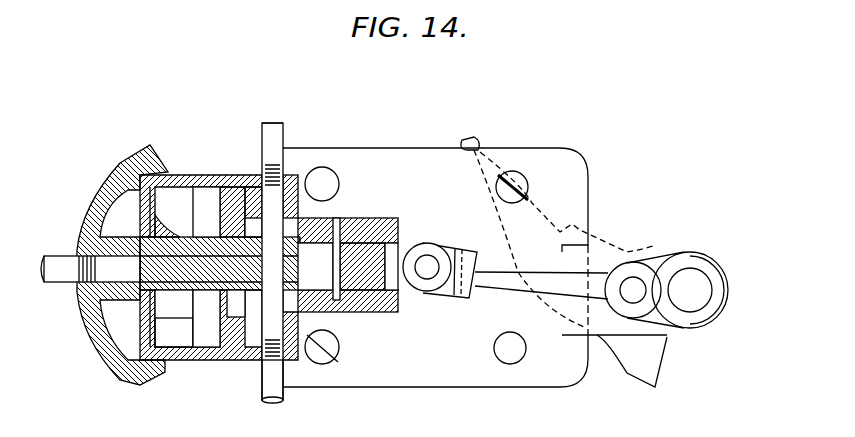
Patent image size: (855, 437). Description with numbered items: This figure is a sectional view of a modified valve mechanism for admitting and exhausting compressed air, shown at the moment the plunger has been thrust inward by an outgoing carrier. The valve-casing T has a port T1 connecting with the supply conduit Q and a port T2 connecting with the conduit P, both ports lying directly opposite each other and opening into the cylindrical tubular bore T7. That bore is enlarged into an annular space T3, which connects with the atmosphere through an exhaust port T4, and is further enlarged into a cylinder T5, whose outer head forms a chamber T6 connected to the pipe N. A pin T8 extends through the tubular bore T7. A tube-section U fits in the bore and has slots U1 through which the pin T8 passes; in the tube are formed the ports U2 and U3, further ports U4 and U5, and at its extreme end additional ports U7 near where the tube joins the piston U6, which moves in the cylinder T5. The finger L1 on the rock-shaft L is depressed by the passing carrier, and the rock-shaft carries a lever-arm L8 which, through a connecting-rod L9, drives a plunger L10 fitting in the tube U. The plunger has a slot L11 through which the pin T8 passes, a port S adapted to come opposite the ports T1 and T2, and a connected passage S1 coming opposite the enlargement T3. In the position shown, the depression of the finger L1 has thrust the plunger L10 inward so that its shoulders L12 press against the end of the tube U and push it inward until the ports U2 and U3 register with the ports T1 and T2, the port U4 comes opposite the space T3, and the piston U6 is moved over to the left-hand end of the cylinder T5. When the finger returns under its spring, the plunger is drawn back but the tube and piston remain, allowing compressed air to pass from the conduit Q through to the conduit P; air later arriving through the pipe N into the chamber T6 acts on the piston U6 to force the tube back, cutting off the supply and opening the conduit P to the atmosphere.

The pipe N is at (58, 262).
The conduit Q is at (273, 126).
The conduit P is at (284, 399).
The port S is at (216, 306).
The port S1 is at (174, 318).
The valve-casing T is at (232, 200).
The port T1 is at (283, 200).
The port T2 is at (268, 384).
The annular space T3 is at (252, 205).
The port T4 is at (217, 355).
The cylinder T5 is at (201, 186).
The chamber T6 is at (142, 208).
The tubular bore T7 is at (340, 360).
The pin T8 is at (316, 313).
The tube-section U is at (352, 225).
The slots U1 is at (336, 240).
The port U2 is at (322, 182).
The port U3 is at (238, 354).
The port U4 is at (228, 300).
The port U5 is at (213, 242).
The piston U6 is at (174, 329).
The ports U7 is at (140, 293).
The rock-shaft L is at (677, 290).
The finger L1 is at (480, 150).
The lever-arm L8 is at (650, 262).
The connecting-rod L9 is at (541, 282).
The plunger L10 is at (403, 256).
The slot L11 is at (348, 266).
The shoulders L12 is at (362, 235).